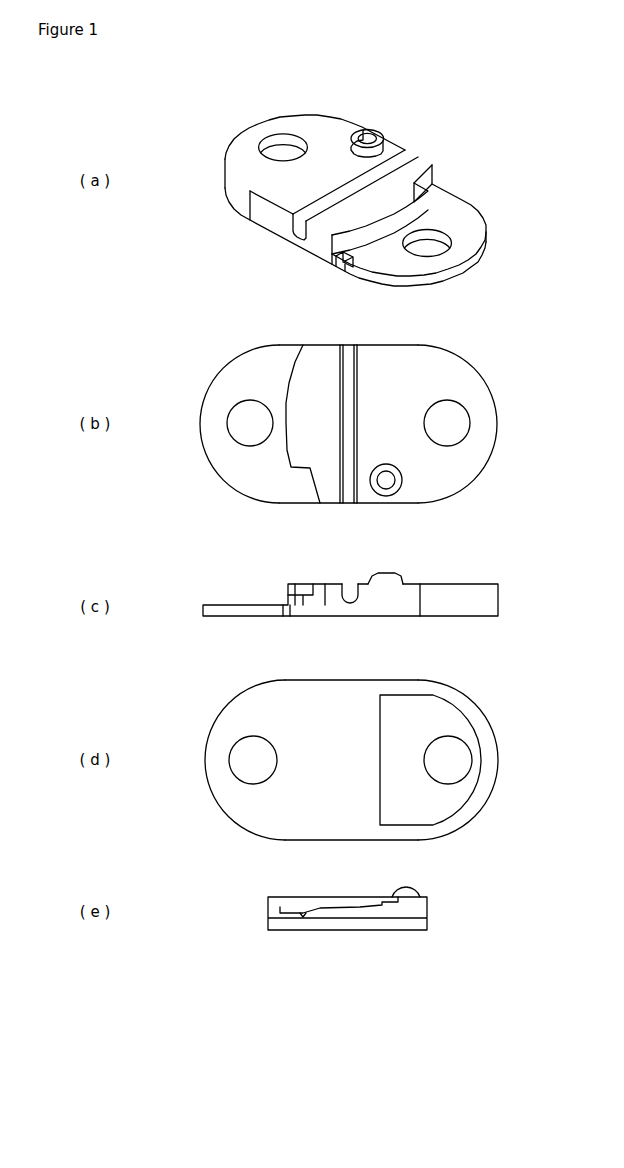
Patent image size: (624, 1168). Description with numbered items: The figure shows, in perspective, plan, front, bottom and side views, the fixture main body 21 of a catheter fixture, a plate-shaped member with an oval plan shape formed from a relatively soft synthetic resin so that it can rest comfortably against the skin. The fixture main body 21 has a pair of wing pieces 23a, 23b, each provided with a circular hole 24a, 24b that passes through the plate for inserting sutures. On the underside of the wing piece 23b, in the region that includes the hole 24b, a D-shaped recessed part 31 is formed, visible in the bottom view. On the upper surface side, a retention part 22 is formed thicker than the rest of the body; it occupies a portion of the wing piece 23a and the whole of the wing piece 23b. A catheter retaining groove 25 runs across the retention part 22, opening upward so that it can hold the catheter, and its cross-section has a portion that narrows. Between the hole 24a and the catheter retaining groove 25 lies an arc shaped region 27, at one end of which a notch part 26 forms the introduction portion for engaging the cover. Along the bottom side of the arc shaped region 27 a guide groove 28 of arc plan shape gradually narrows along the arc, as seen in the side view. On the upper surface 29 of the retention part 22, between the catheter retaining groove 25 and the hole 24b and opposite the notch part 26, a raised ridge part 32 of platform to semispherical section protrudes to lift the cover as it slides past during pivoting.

The fixture main body 21 is at (151, 130).
The retention part 22 is at (275, 218).
The wing piece 23a is at (463, 215).
The wing piece 23b is at (246, 133).
The hole 24a is at (450, 244).
The hole 24b is at (262, 152).
The catheter retaining groove 25 is at (383, 140).
The notch part 26 is at (434, 178).
The arc shaped region 27 is at (373, 226).
The guide groove 28 is at (347, 262).
The upper surface 29 is at (297, 191).
The D-shaped recessed part 31 is at (442, 810).
The raised ridge part 32 is at (366, 150).